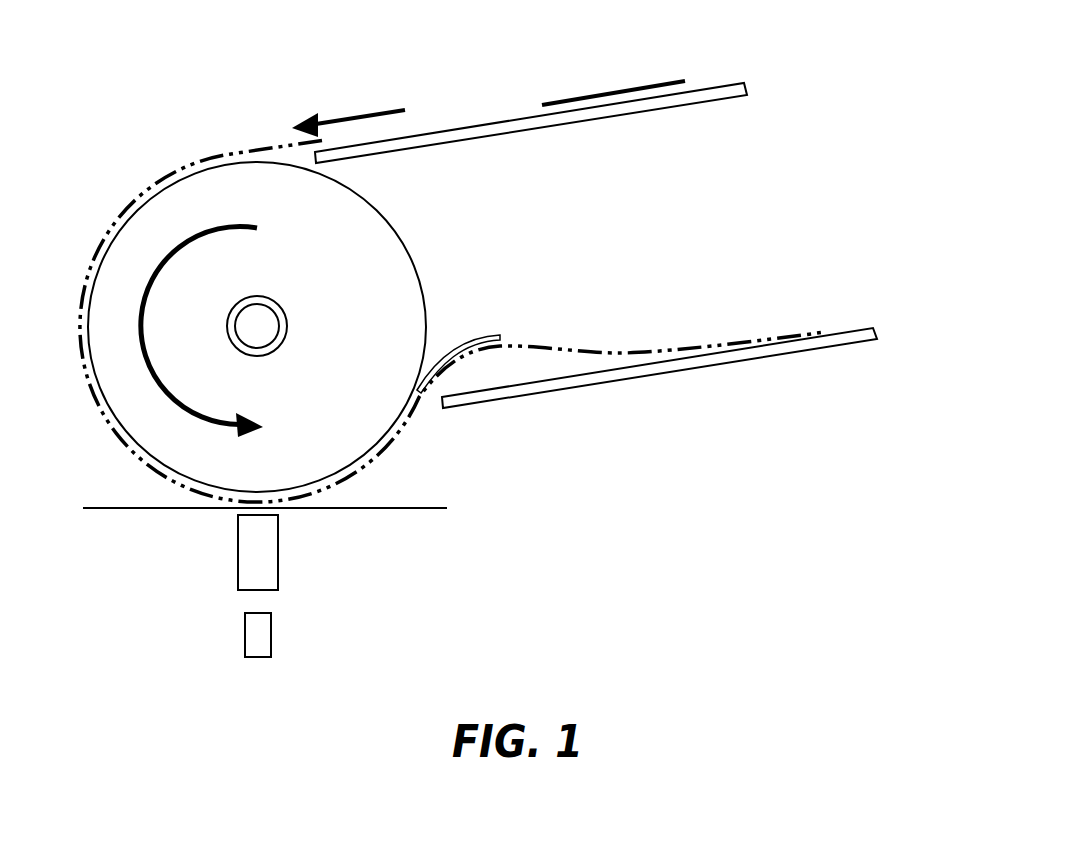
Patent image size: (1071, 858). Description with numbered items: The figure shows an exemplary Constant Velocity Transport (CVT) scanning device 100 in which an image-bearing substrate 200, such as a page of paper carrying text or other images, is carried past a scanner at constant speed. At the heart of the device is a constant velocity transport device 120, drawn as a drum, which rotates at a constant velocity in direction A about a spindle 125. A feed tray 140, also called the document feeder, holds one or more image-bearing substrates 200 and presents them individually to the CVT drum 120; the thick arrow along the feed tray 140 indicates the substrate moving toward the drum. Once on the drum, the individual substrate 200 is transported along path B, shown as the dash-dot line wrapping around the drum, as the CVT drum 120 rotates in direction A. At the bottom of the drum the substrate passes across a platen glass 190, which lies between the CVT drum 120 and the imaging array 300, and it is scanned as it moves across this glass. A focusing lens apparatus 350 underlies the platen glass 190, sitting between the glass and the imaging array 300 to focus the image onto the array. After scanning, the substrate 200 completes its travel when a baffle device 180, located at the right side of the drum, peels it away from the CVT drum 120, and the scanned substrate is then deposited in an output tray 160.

The Constant Velocity Transport (CVT) scanning device 100 is at (180, 150).
The constant velocity transport device 120 is at (398, 258).
The spindle 125 is at (262, 323).
The feed tray 140 is at (725, 82).
The output tray 160 is at (833, 332).
The baffle device 180 is at (492, 333).
The platen glass 190 is at (425, 507).
The image-bearing substrate 200 is at (544, 90).
The imaging array 300 is at (271, 632).
The focusing lens apparatus 350 is at (278, 557).
The direction A is at (157, 310).
The path B is at (122, 215).